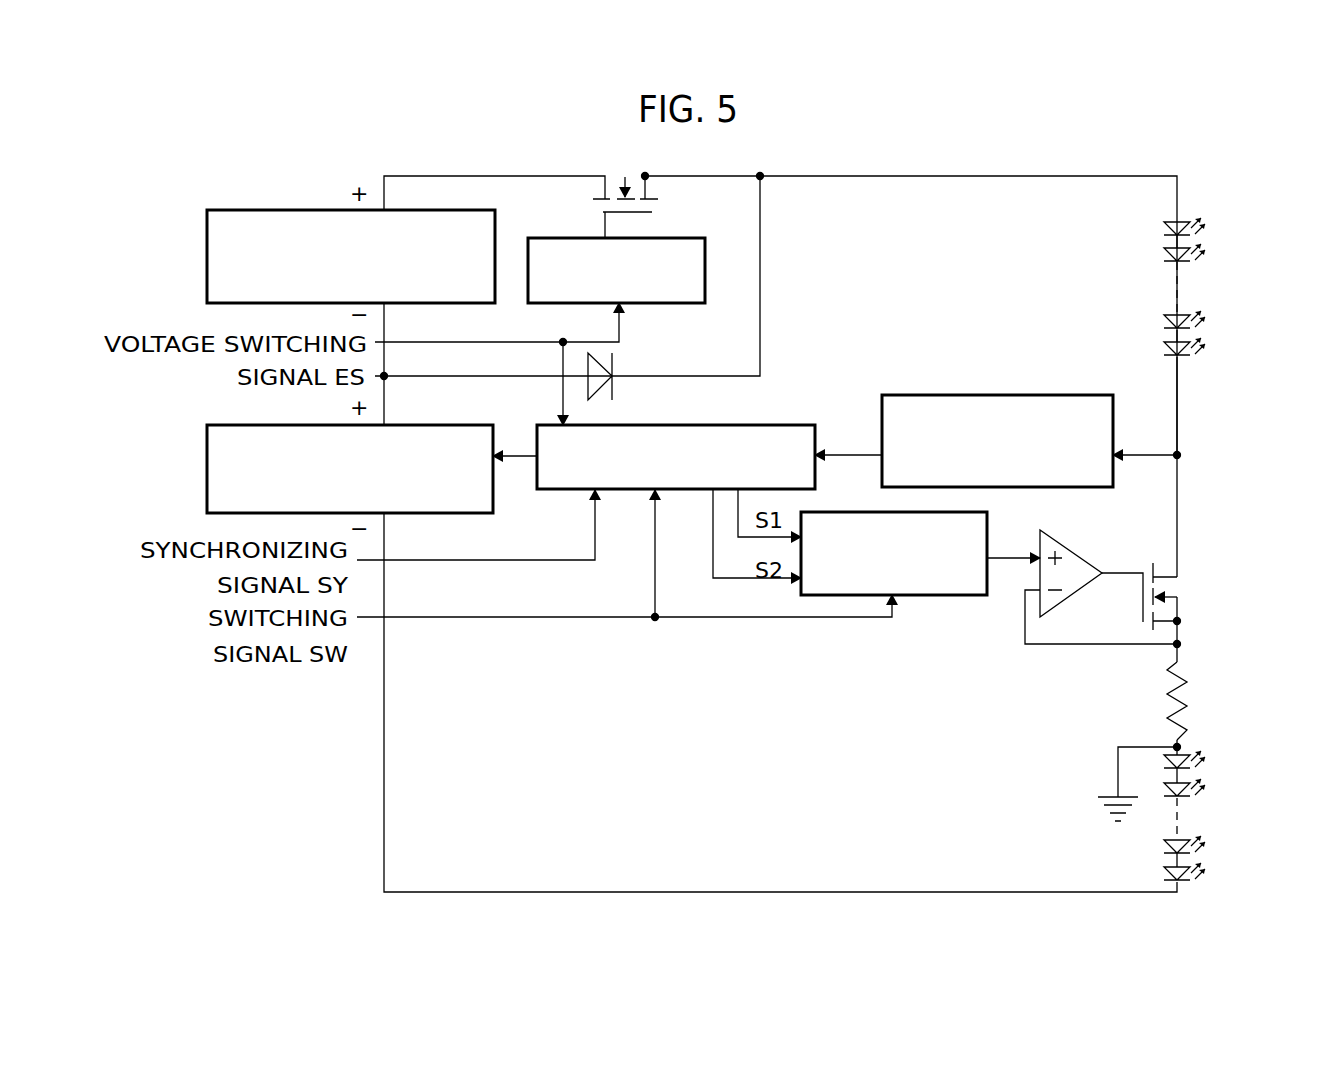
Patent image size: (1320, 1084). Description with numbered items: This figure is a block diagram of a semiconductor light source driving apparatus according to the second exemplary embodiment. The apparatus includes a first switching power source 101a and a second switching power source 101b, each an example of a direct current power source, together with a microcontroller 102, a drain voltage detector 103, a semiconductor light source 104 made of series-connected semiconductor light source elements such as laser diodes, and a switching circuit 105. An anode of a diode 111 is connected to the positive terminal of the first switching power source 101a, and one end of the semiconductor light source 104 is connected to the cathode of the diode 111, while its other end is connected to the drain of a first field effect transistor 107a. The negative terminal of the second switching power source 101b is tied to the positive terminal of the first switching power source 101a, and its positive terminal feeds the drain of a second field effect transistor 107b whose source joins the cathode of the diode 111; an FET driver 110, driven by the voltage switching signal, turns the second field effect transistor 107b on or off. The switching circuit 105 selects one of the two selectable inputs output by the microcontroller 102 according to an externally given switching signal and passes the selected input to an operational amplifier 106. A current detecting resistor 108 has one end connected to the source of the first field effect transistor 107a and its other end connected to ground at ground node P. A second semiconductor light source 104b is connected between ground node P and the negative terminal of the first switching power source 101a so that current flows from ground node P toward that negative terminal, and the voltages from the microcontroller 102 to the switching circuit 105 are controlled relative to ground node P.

The first switching power source 101a is at (452, 425).
The second switching power source 101b is at (437, 210).
The microcontroller 102 is at (710, 425).
The drain voltage detector 103 is at (1069, 389).
The semiconductor light source 104 is at (1228, 210).
The second semiconductor light source 104b is at (1218, 743).
The switching circuit 105 is at (988, 533).
The operational amplifier 106 is at (1077, 548).
The first field effect transistor 107a is at (1198, 594).
The second field effect transistor 107b is at (619, 169).
The current detecting resistor 108 is at (1196, 699).
The FET driver 110 is at (697, 238).
The diode 111 is at (620, 367).
The ground node P is at (1166, 740).